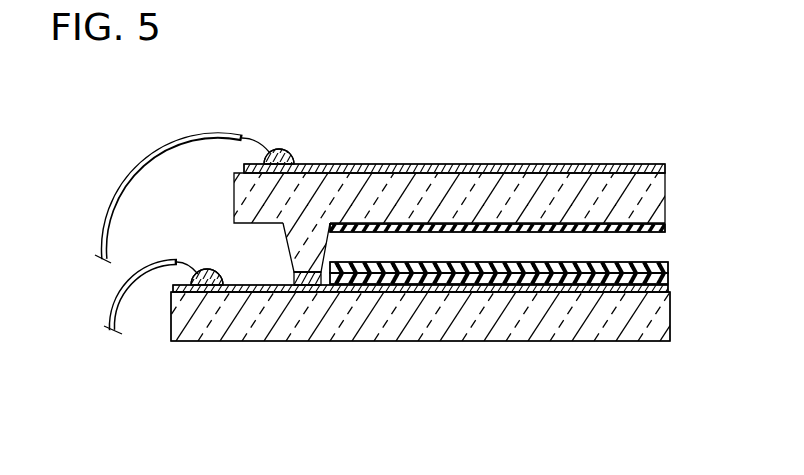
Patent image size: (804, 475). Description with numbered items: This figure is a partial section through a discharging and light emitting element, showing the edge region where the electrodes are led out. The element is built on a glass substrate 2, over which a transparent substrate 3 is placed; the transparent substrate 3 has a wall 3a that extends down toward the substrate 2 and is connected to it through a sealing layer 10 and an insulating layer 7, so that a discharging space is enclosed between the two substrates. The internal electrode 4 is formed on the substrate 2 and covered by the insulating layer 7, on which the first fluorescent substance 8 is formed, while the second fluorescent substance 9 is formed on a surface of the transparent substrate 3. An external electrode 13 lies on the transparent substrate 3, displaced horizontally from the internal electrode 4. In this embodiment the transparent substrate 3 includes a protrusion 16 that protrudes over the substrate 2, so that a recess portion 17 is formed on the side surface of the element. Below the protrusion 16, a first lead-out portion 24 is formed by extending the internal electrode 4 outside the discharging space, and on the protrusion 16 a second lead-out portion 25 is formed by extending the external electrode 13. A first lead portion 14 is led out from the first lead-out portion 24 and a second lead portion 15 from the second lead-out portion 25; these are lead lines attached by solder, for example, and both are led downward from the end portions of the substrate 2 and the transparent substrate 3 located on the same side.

The substrate 2 is at (658, 325).
The transparent substrate 3 is at (658, 193).
The wall 3a is at (295, 238).
The internal electrode 4 is at (497, 289).
The insulating layer 7 is at (658, 279).
The first fluorescent substance 8 is at (668, 265).
The second fluorescent substance 9 is at (665, 228).
The sealing layer 10 is at (307, 279).
The external electrode 13 is at (506, 170).
The first lead portion 14 is at (118, 297).
The second lead portion 15 is at (141, 168).
The protrusion 16 is at (257, 200).
The recess portion 17 is at (263, 257).
The first lead-out portion 24 is at (233, 293).
The second lead-out portion 25 is at (243, 166).